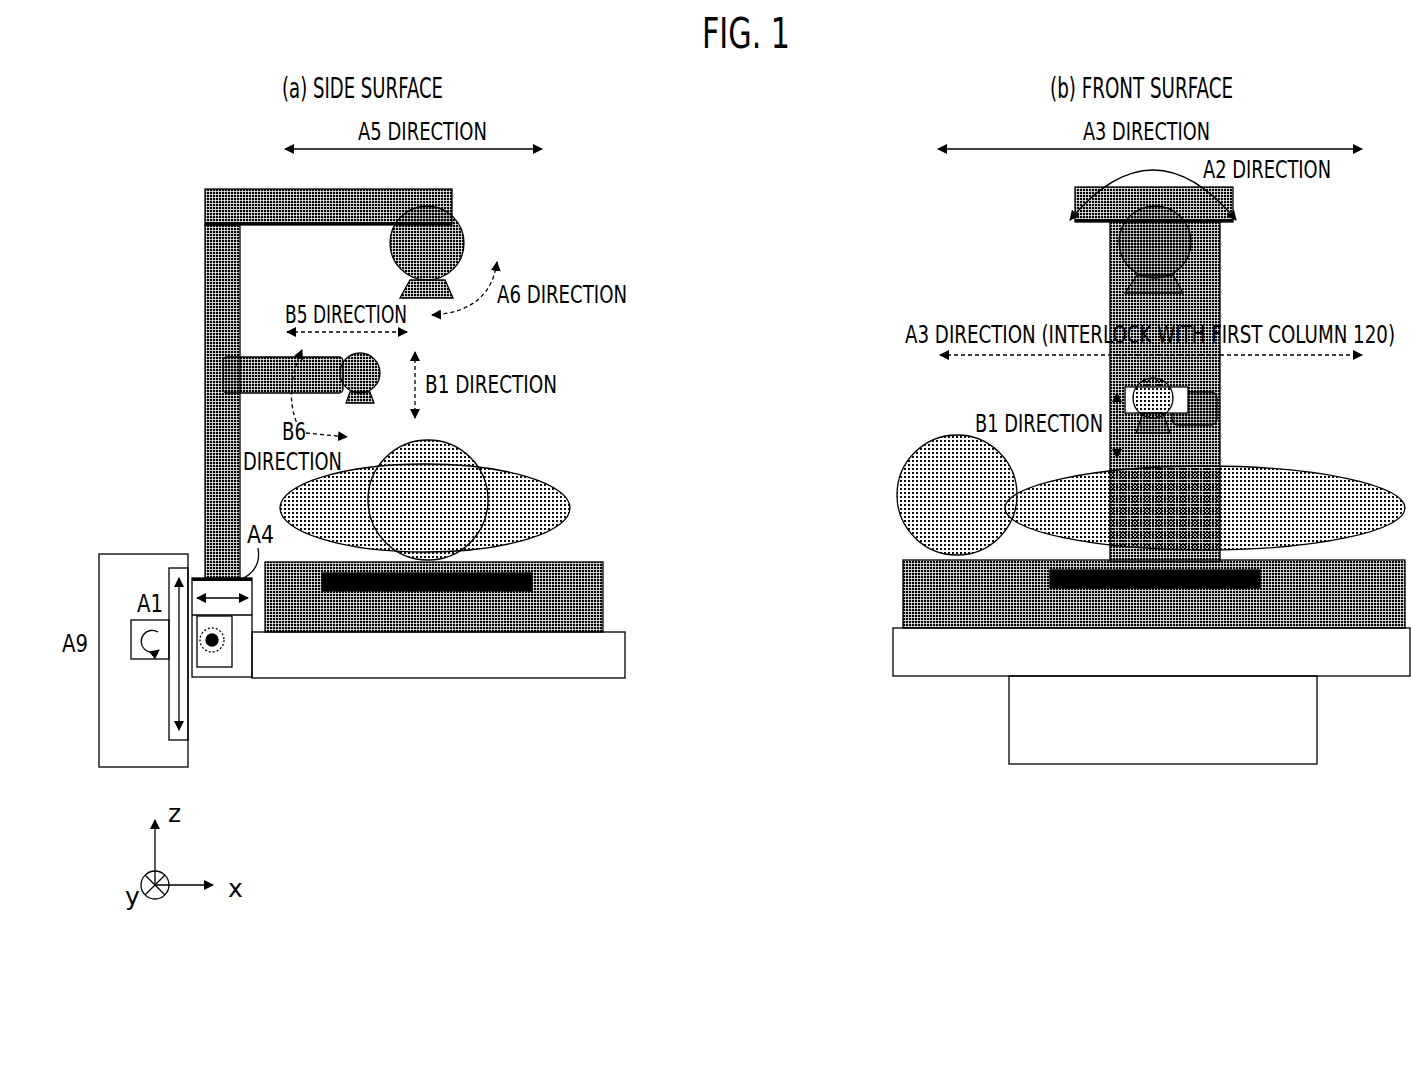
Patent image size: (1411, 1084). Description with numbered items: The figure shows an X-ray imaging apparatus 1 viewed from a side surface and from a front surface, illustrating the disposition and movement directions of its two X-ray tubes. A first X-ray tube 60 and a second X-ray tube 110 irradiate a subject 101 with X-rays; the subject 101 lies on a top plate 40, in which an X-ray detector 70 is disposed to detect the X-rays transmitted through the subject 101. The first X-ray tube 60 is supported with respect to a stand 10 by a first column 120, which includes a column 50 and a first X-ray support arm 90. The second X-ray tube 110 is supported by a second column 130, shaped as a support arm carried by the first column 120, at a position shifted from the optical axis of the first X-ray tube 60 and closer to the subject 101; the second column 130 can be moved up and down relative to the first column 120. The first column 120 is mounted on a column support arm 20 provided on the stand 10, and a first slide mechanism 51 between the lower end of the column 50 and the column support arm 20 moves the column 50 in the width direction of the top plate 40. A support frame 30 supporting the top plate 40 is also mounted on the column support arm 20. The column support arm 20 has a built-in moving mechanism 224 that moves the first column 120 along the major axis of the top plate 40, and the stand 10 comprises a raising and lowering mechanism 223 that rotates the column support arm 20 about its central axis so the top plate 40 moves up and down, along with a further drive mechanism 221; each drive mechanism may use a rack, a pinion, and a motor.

The X-ray imaging apparatus 1 is at (557, 103).
The stand 10 is at (157, 565).
The column support arm 20 is at (212, 678).
The support frame 30 is at (600, 655).
The top plate 40 is at (585, 610).
The column 50 is at (222, 268).
The first slide mechanism 51 is at (200, 578).
The first X-ray tube 60 is at (452, 222).
The X-ray detector 70 is at (540, 584).
The first X-ray support arm 90 is at (257, 202).
The subject 101 is at (560, 497).
The second X-ray tube 110 is at (362, 402).
The first column 120 is at (130, 133).
The second column 130 is at (270, 355).
The drive mechanism 221 is at (186, 735).
The raising and lowering mechanism 223 is at (130, 624).
The moving mechanism 224 is at (225, 672).